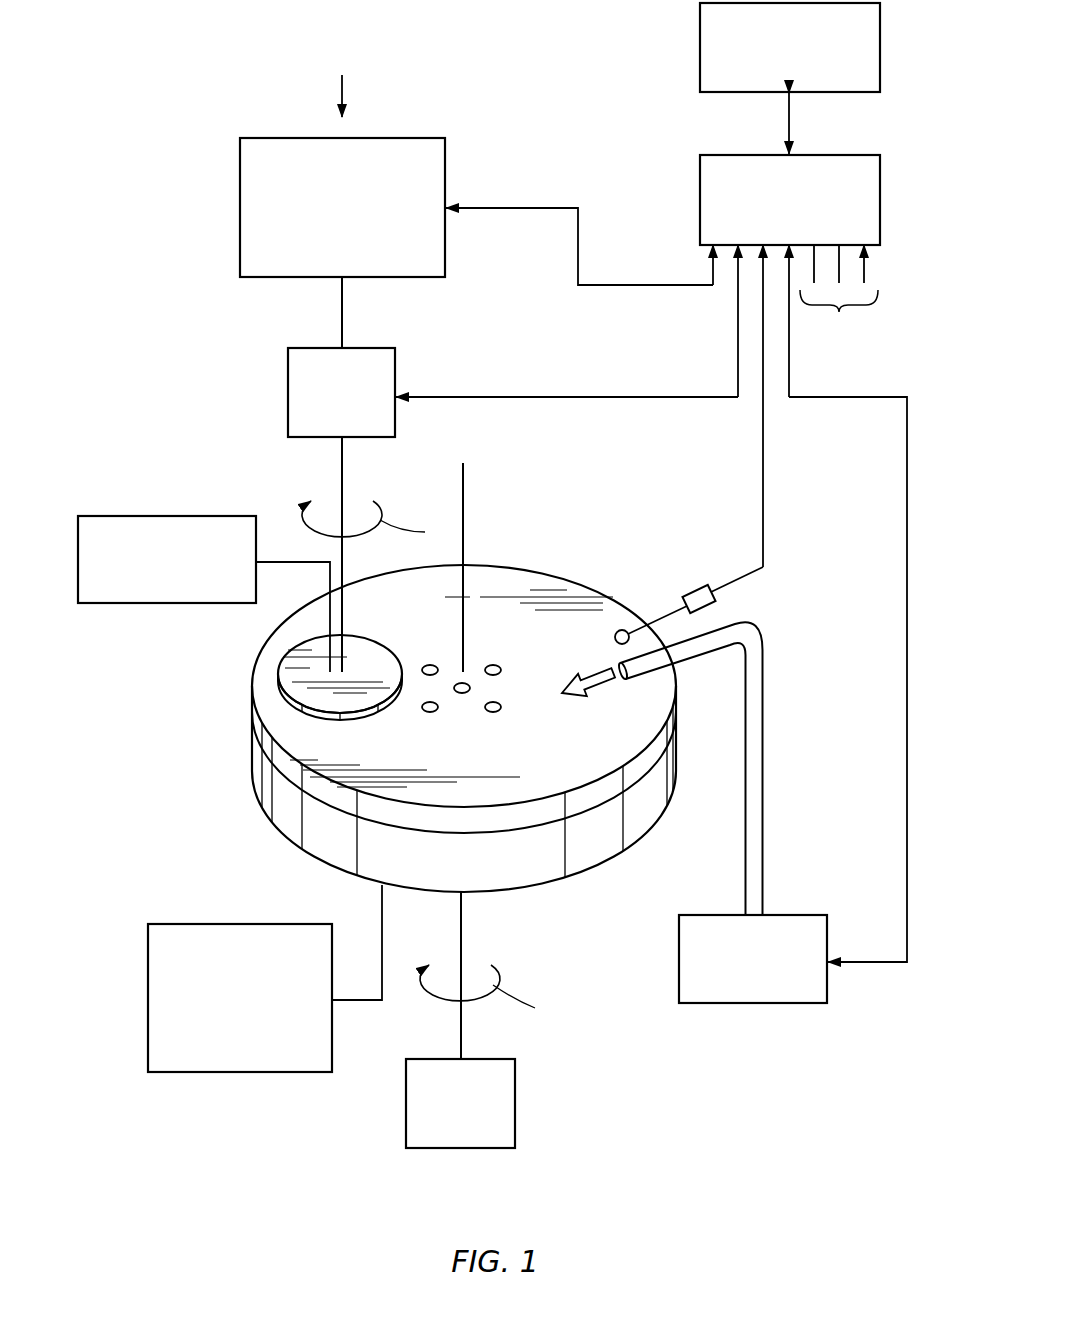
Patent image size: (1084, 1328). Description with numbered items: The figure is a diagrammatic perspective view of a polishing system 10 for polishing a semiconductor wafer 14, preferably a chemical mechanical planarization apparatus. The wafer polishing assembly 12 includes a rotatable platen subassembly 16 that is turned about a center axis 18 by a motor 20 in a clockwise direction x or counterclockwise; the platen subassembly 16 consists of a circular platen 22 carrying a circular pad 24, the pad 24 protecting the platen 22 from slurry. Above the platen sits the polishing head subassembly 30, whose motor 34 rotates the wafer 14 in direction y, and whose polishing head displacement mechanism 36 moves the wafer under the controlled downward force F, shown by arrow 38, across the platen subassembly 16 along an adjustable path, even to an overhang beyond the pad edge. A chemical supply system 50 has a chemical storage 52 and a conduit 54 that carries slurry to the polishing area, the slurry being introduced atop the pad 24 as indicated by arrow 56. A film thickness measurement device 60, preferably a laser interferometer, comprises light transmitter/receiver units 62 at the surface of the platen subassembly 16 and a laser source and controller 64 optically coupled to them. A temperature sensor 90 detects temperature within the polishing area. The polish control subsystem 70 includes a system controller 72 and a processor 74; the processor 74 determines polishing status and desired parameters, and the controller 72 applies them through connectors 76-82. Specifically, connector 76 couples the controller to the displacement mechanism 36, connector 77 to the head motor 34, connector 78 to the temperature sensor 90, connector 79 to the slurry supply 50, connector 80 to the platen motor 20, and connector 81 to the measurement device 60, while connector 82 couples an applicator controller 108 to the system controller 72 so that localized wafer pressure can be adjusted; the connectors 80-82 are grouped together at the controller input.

The polishing system 10 is at (238, 1162).
The wafer polishing assembly 12 is at (556, 514).
The semiconductor wafer 14 is at (372, 665).
The rotatable platen subassembly 16 is at (585, 882).
The center axis 18 is at (464, 500).
The motor or other drive mechanism 20 is at (517, 1072).
The platen 22 is at (678, 752).
The pad 24 is at (252, 726).
The polishing head subassembly 30 is at (232, 316).
The motor or other drive mechanism 34 is at (288, 397).
The polishing head displacement mechanism 36 is at (446, 170).
The arrow 38 is at (341, 88).
The chemical supply system 50 is at (792, 734).
The chemical storage 52 is at (781, 913).
The conduit 54 is at (764, 806).
The arrow 56 is at (572, 700).
The film thickness measurement device 60 is at (356, 1072).
The light transmitter/receiver units 62 is at (430, 712).
The laser source and controller 64 is at (213, 923).
The polish control subsystem 70 is at (890, 130).
The system controller 72 is at (882, 197).
The processor 74 is at (699, 43).
The connector 76 is at (585, 246).
The connector 77 is at (515, 395).
The connector 78 is at (762, 468).
The connector 79 is at (906, 546).
The connector 80 is at (517, 1107).
The connector 81 is at (147, 1000).
The connector 82 is at (147, 604).
The connectors 80-82 is at (839, 294).
The temperature sensor 90 is at (697, 591).
The applicator controller 108 is at (143, 515).